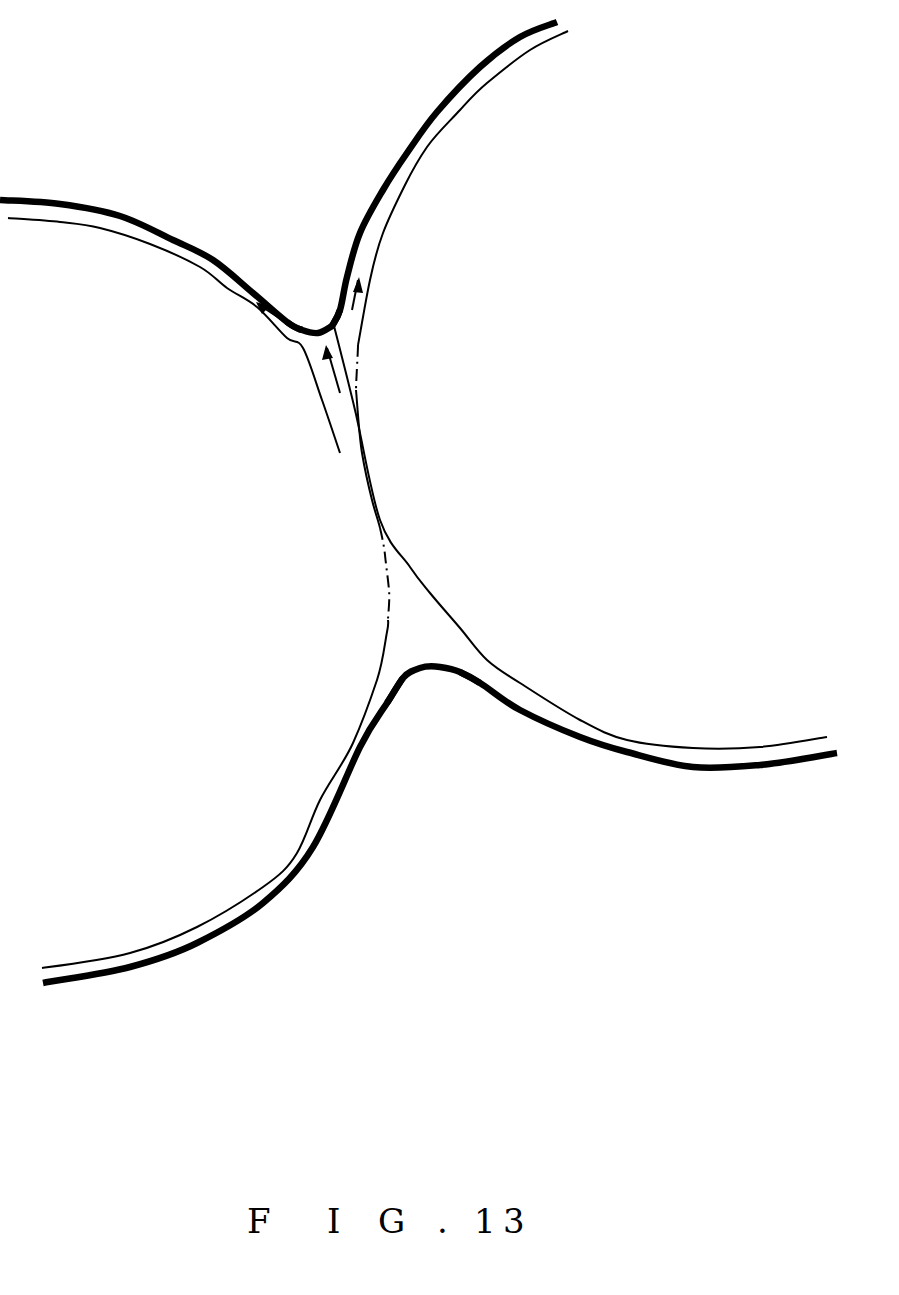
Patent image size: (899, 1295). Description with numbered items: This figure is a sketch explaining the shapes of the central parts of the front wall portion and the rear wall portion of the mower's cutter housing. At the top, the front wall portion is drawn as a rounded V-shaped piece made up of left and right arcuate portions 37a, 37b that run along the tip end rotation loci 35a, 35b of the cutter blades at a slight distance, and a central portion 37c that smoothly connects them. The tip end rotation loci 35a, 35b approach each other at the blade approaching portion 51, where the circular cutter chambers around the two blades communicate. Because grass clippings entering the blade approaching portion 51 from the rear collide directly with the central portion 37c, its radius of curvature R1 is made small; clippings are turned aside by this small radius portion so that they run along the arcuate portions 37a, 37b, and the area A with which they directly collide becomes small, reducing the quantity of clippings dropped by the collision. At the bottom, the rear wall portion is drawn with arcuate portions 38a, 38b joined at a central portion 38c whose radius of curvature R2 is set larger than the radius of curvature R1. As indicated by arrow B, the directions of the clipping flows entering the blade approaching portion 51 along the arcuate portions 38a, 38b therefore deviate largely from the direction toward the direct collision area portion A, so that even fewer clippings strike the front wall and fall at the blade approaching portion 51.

The arcuate portion 37a is at (435, 115).
The arcuate portion 37b is at (92, 208).
The central portion 37c is at (302, 323).
The tip end rotation locus 35a is at (380, 237).
The tip end rotation locus 35b is at (148, 247).
The blade approaching portion 51 is at (397, 482).
The arcuate portion 38a is at (697, 768).
The arcuate portion 38b is at (318, 845).
The central portion 38c is at (453, 672).
The radius of curvature R1 is at (317, 325).
The radius of curvature R2 is at (423, 678).
The direct collision area portion A is at (330, 434).
The arrow B is at (460, 670).